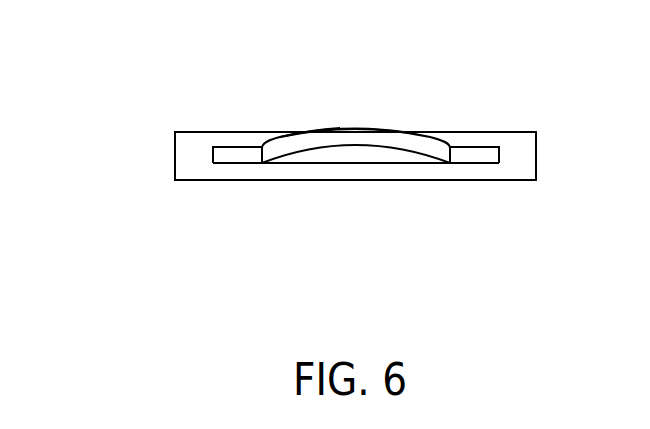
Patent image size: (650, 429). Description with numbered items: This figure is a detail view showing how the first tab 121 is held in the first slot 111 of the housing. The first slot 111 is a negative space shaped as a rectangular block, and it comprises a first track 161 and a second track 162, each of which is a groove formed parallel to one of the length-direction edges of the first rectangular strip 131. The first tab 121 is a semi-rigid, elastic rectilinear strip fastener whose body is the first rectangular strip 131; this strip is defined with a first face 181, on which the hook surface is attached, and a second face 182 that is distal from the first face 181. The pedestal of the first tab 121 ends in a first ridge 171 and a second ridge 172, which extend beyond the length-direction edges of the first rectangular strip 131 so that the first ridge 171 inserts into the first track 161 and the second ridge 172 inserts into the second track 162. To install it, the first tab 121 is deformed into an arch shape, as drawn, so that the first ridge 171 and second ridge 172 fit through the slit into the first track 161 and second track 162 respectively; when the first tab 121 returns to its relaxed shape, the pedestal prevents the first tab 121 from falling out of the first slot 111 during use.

The first slot 111 is at (498, 132).
The first tab 121 is at (408, 131).
The first rectangular strip 131 is at (388, 130).
The first track 161 is at (530, 155).
The second track 162 is at (190, 150).
The first ridge 171 is at (483, 155).
The second ridge 172 is at (235, 153).
The first face 181 is at (323, 130).
The second face 182 is at (360, 145).